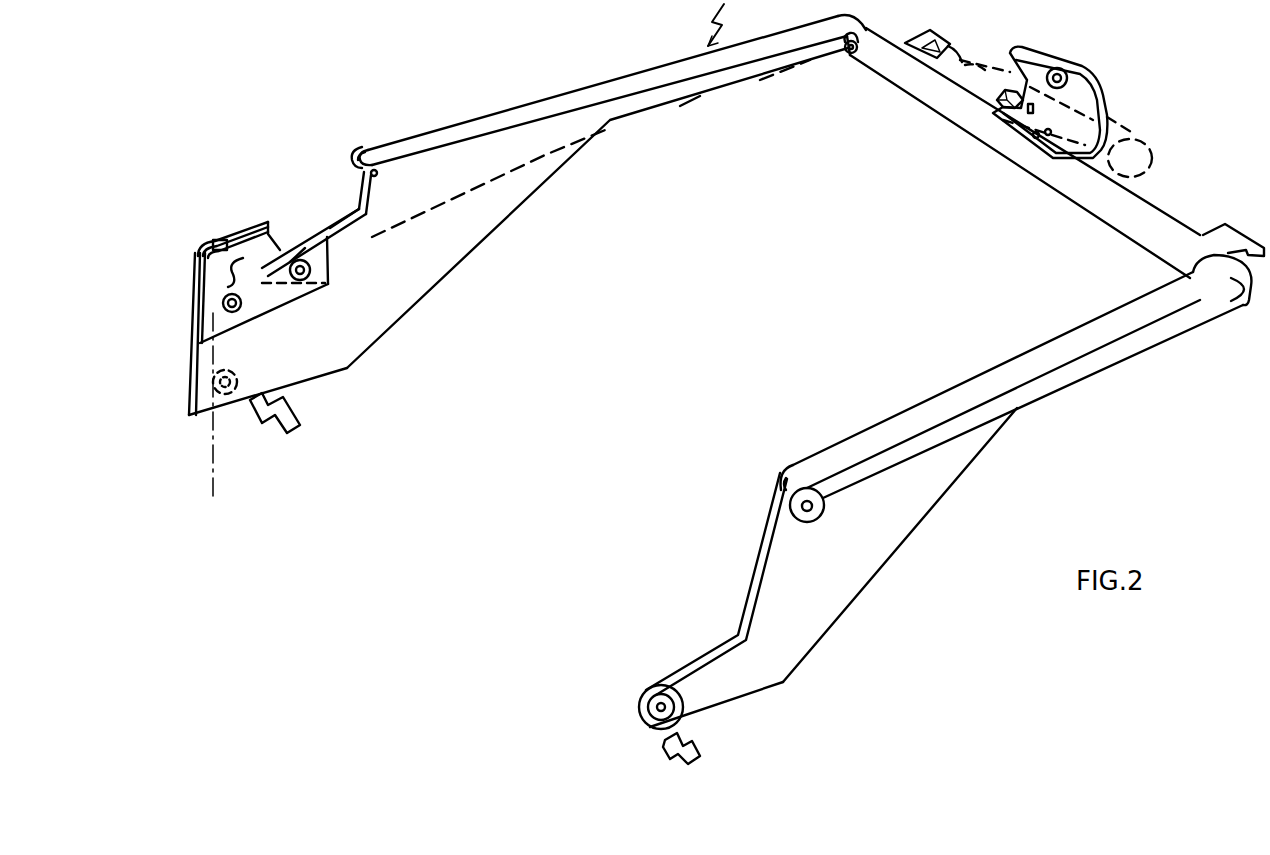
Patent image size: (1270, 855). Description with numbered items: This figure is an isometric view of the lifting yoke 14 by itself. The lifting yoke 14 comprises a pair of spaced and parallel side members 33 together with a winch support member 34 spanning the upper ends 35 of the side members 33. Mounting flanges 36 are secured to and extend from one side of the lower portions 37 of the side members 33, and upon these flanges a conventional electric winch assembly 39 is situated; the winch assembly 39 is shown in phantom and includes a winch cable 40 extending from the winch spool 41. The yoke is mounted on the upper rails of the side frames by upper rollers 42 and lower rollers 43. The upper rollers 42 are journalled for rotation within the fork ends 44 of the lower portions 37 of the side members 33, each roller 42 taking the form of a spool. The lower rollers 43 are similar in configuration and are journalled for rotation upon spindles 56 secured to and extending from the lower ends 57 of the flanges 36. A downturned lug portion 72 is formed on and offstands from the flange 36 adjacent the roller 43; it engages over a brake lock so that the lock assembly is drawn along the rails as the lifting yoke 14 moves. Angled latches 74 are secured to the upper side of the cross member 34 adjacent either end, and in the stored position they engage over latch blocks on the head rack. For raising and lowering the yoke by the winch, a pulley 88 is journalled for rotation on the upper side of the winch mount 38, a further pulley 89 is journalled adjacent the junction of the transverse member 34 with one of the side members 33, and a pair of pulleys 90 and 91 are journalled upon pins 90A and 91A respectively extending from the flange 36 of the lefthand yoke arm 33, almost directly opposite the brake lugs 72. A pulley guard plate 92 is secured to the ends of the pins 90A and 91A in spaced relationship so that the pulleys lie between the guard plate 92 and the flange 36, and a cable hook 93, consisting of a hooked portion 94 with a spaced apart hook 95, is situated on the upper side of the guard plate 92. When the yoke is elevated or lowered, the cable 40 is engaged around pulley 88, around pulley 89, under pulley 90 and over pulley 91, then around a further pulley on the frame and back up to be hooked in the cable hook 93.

The lifting yoke 14 is at (735, 25).
The side members 33 is at (692, 84).
The winch support member 34 is at (1128, 212).
The upper ends 35 is at (838, 22).
The mounting flanges 36 is at (906, 505).
The lower portions 37 is at (455, 137).
The winch mount 38 is at (1110, 100).
The electric winch assembly 39 is at (1150, 162).
The winch cable 40 is at (958, 66).
The winch spool 41 is at (1000, 108).
The upper rollers 42 is at (779, 496).
The lower rollers 43 is at (664, 703).
The fork ends 44 is at (358, 152).
The spindles 56 is at (672, 708).
The lower ends 57 is at (651, 701).
The downturned lug portion 72 is at (290, 410).
The angled latches 74 is at (925, 44).
The pulley 88 is at (1062, 70).
The further pulley 89 is at (851, 55).
The pulley 90 is at (320, 262).
The pin 90A is at (299, 262).
The pulley 91 is at (243, 308).
The pin 91A is at (196, 300).
The pulley guard plate 92 is at (328, 285).
The cable hook 93 is at (304, 262).
The hooked portion 94 is at (303, 244).
The hook 95 is at (240, 262).